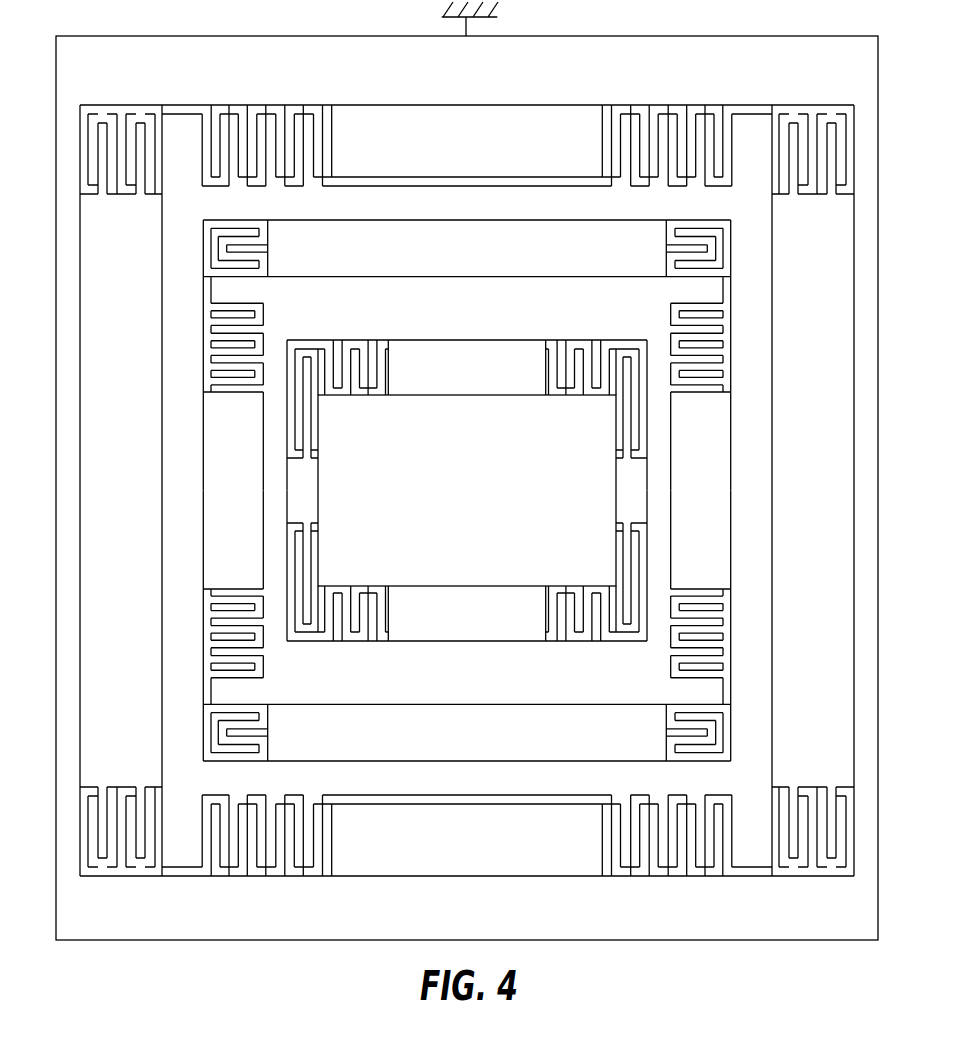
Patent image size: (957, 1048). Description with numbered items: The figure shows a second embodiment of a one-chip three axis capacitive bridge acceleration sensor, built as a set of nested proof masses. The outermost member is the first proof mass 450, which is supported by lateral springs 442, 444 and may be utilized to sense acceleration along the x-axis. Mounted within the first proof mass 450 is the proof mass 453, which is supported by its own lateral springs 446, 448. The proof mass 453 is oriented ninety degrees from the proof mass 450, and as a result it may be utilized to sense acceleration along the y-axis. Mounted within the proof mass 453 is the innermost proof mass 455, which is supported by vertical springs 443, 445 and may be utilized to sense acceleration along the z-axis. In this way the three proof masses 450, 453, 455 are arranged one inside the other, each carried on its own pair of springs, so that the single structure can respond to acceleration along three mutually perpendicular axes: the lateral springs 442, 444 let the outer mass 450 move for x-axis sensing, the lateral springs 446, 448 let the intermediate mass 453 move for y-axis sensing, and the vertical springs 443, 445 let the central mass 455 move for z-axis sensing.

The lateral spring 442 is at (108, 105).
The lateral spring 444 is at (826, 105).
The lateral spring 446 is at (218, 237).
The lateral spring 448 is at (218, 744).
The first proof mass 450 is at (195, 496).
The proof mass 453 is at (481, 316).
The proof mass 455 is at (481, 504).
The vertical spring 443 is at (311, 421).
The vertical spring 445 is at (623, 421).